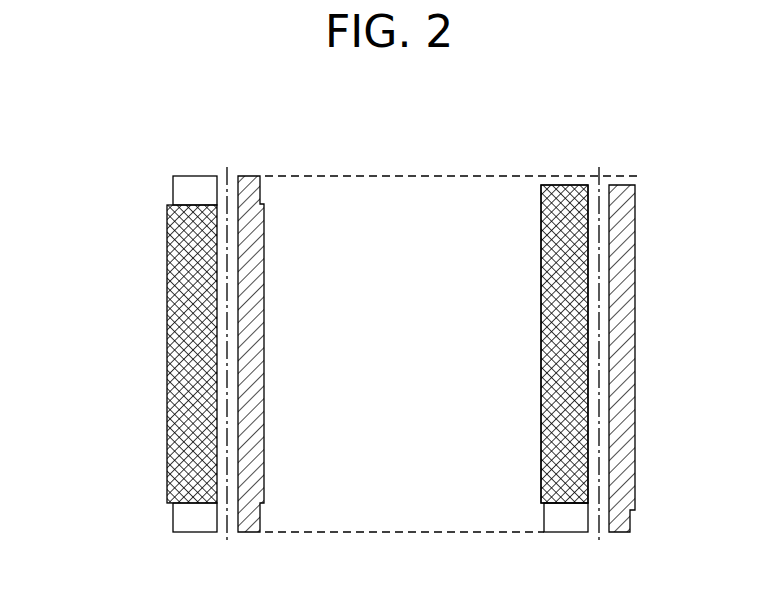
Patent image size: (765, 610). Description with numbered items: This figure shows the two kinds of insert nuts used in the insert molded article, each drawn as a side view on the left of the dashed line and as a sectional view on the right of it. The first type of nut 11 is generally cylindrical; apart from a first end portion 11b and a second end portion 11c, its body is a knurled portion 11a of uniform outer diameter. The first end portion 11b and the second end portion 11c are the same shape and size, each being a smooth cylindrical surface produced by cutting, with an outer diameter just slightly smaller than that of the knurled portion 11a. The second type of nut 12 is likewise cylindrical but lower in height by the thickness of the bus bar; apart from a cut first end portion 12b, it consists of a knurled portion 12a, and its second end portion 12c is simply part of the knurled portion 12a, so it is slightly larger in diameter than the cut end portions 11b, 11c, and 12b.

The first type of nut 11 is at (241, 107).
The knurled portion 11a is at (198, 340).
The first end portion 11b is at (202, 513).
The second end portion 11c is at (195, 190).
The second type of nut 12 is at (605, 107).
The knurled portion 12a is at (562, 355).
The first end portion 12b is at (570, 518).
The second end portion 12c is at (548, 198).